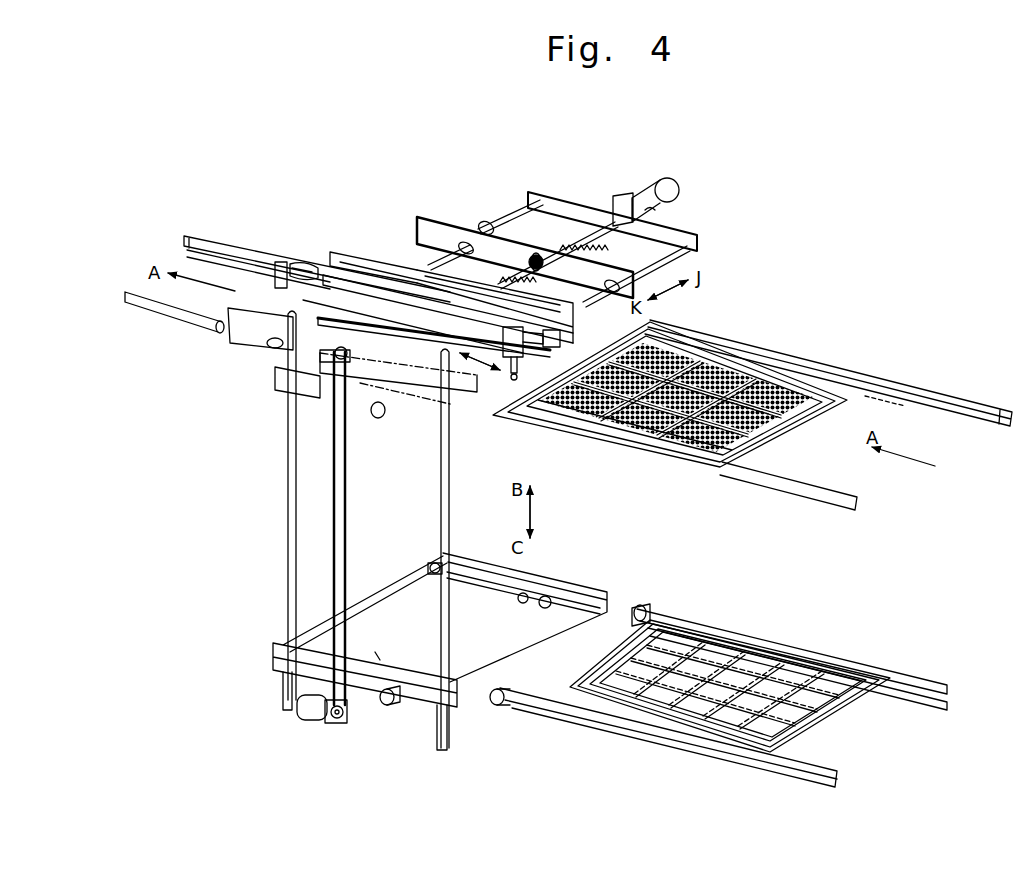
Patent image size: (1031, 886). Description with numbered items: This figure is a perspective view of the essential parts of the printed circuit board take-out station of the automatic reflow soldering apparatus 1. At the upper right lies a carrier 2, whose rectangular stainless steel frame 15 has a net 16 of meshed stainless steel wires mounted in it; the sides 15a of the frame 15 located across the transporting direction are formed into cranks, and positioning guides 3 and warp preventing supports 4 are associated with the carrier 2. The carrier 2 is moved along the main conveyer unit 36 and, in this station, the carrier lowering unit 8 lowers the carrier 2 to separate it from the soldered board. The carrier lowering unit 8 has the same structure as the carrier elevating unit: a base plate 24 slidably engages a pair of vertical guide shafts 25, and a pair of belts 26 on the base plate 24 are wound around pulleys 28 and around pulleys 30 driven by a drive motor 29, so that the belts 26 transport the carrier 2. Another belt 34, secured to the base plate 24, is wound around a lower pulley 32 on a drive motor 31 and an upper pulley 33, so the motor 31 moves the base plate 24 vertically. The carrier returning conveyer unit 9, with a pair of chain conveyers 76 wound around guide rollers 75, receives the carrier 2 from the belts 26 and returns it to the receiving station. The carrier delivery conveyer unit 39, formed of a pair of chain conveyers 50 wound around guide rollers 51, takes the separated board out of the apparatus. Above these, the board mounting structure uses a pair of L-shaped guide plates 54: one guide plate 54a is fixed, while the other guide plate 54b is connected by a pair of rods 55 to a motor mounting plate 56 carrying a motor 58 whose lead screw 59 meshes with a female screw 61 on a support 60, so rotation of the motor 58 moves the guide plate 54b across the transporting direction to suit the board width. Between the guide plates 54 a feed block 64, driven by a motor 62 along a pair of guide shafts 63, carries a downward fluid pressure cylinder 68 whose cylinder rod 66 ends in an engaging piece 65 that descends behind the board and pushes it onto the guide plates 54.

The automatic reflow soldering apparatus 1 is at (860, 226).
The carrier 2 is at (800, 442).
The positioning guides 3 is at (545, 416).
The warp preventing supports 4 is at (797, 380).
The carrier lowering unit 8 is at (320, 742).
The carrier returning conveyer unit 9 is at (612, 742).
The frame 15 is at (762, 458).
The sides of the frame 15a is at (690, 340).
The net 16 is at (680, 446).
The base plate 24 is at (275, 652).
The vertical guide shafts 25 is at (288, 510).
The belts 26 is at (374, 645).
The pulleys 28 is at (434, 575).
The drive motor 29 is at (393, 705).
The pulleys 30 is at (560, 592).
The drive motor 31 is at (303, 722).
The lower pulley 32 is at (345, 726).
The upper pulley 33 is at (333, 400).
The belt 34 is at (332, 553).
The main conveyer unit 36 is at (925, 407).
The carrier delivery conveyer unit 39 is at (188, 233).
The chain conveyers 50 is at (245, 248).
The guide rollers 51 is at (210, 320).
The guide plates 54 is at (353, 258).
The guide plate 54a is at (255, 352).
The guide plate 54b is at (382, 255).
The rods 55 is at (515, 210).
The motor mounting plate 56 is at (695, 245).
The motor 58 is at (672, 195).
The lead screw 59 is at (578, 235).
The support 60 is at (610, 268).
The female screw 61 is at (537, 255).
The motor 62 is at (480, 225).
The guide shafts 63 is at (318, 276).
The feed block 64 is at (507, 331).
The engaging piece 65 is at (510, 386).
The cylinder rod 66 is at (458, 358).
The fluid pressure cylinder 68 is at (516, 385).
The guide rollers 75 is at (680, 618).
The chain conveyers 76 is at (650, 610).